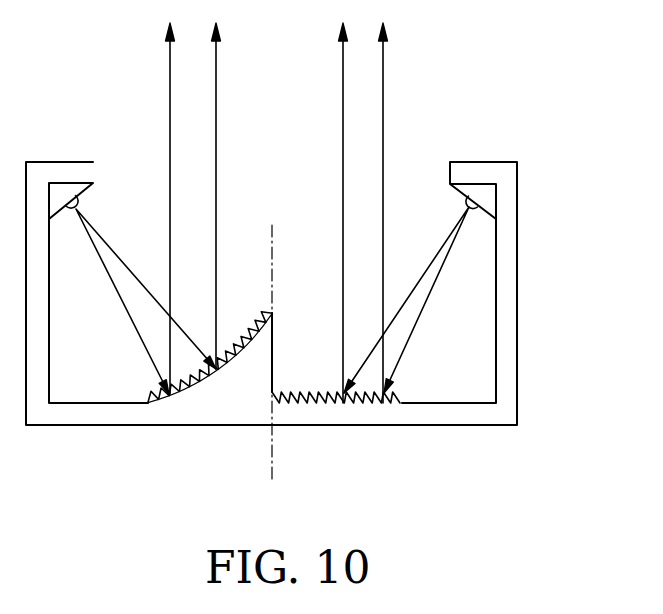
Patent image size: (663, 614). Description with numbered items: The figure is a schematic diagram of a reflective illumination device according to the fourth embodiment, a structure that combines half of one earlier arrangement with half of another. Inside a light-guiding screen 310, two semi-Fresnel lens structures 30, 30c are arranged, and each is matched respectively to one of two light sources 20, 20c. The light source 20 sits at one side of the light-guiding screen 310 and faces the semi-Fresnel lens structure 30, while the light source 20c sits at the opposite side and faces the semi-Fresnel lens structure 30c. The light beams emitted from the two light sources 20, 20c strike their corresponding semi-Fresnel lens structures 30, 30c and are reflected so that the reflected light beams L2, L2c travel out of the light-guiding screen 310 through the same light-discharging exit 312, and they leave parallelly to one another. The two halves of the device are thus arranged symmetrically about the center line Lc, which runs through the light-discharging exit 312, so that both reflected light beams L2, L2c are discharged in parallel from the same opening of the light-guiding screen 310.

The light-guiding screen 310 is at (532, 390).
The light-discharging exit 312 is at (272, 182).
The light source 20 is at (463, 207).
The light source 20c is at (80, 205).
The semi-Fresnel lens structure 30 is at (305, 382).
The semi-Fresnel lens structure 30c is at (248, 325).
The reflected light beam L2 is at (383, 86).
The reflected light beam L2c is at (170, 97).
The center line Lc is at (270, 474).